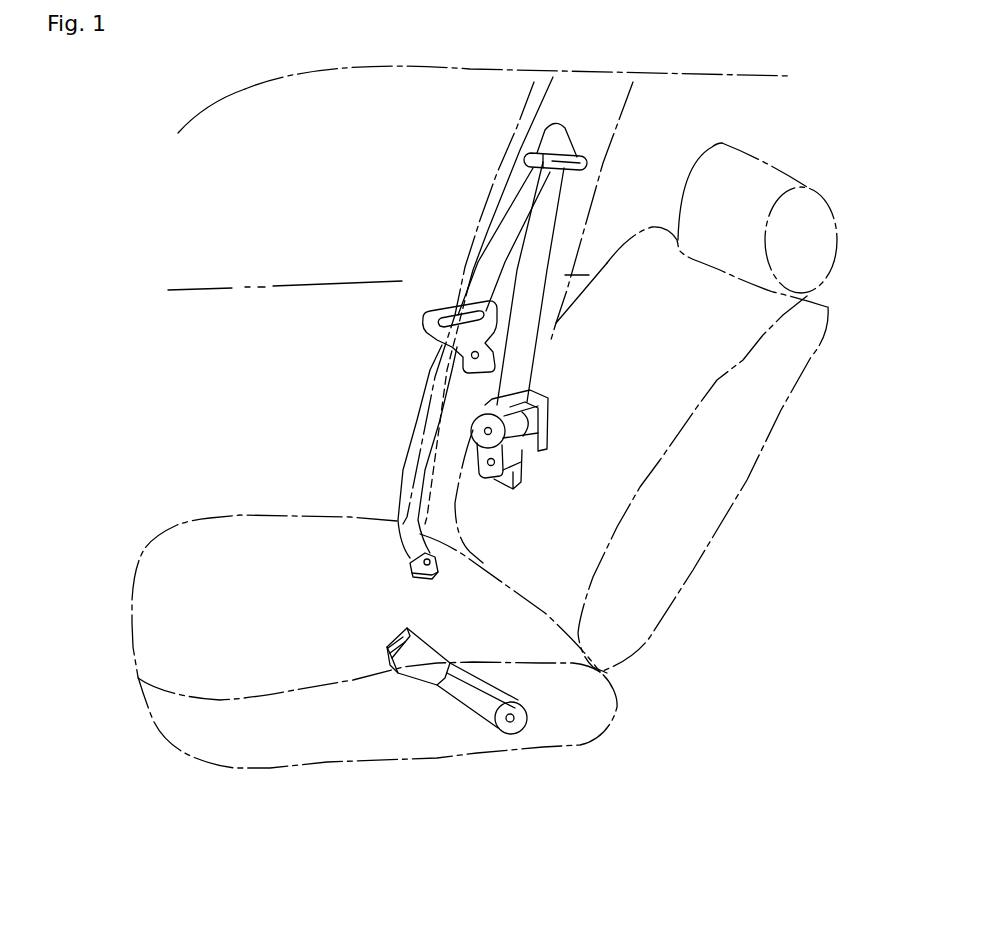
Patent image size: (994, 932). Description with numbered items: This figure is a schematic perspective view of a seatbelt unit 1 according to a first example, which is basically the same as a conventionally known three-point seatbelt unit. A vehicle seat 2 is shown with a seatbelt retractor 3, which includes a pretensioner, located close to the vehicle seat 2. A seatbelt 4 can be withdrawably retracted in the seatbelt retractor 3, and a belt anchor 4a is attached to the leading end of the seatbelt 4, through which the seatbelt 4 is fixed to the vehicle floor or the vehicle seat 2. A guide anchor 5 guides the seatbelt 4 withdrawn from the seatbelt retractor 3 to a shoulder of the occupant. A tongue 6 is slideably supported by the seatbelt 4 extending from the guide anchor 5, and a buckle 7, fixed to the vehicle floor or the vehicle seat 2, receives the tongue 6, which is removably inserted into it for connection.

The seatbelt unit 1 is at (590, 513).
The vehicle seat 2 is at (258, 736).
The seatbelt retractor 3 is at (548, 430).
The seatbelt 4 is at (506, 252).
The belt anchor 4a is at (430, 576).
The guide anchor 5 is at (567, 137).
The tongue 6 is at (436, 322).
The buckle 7 is at (397, 667).